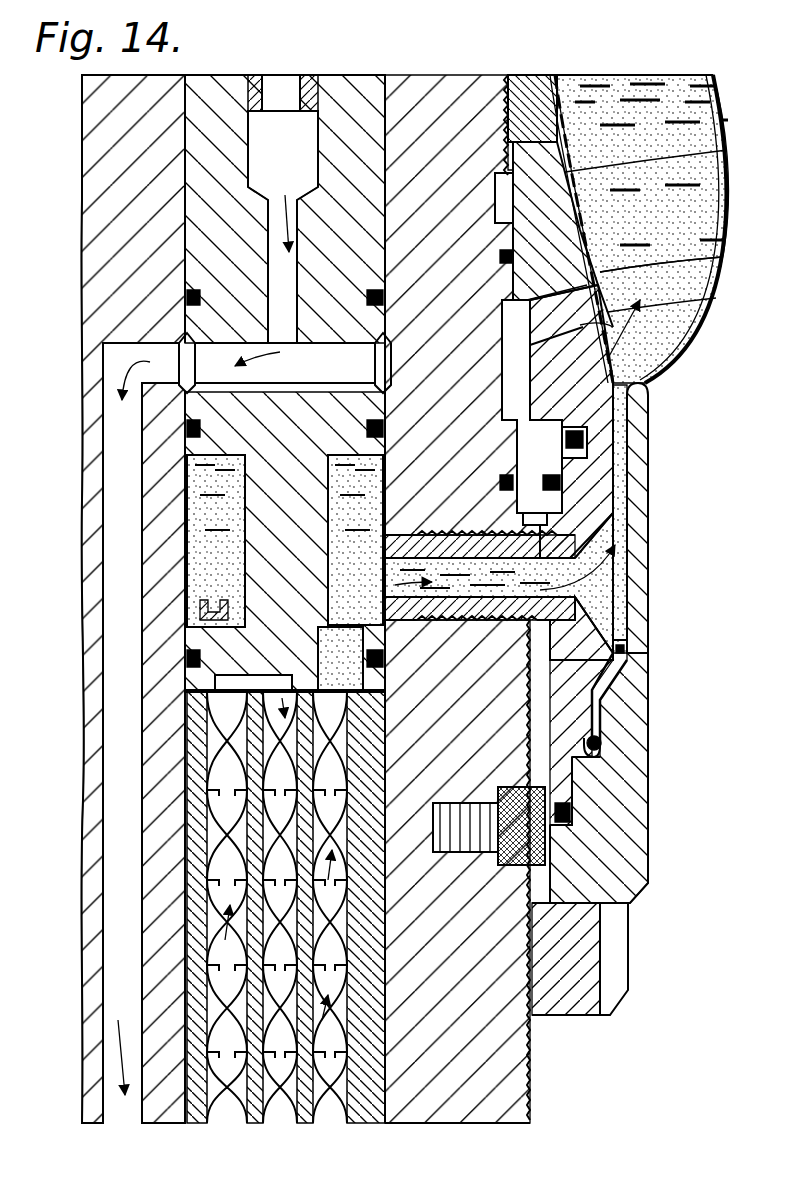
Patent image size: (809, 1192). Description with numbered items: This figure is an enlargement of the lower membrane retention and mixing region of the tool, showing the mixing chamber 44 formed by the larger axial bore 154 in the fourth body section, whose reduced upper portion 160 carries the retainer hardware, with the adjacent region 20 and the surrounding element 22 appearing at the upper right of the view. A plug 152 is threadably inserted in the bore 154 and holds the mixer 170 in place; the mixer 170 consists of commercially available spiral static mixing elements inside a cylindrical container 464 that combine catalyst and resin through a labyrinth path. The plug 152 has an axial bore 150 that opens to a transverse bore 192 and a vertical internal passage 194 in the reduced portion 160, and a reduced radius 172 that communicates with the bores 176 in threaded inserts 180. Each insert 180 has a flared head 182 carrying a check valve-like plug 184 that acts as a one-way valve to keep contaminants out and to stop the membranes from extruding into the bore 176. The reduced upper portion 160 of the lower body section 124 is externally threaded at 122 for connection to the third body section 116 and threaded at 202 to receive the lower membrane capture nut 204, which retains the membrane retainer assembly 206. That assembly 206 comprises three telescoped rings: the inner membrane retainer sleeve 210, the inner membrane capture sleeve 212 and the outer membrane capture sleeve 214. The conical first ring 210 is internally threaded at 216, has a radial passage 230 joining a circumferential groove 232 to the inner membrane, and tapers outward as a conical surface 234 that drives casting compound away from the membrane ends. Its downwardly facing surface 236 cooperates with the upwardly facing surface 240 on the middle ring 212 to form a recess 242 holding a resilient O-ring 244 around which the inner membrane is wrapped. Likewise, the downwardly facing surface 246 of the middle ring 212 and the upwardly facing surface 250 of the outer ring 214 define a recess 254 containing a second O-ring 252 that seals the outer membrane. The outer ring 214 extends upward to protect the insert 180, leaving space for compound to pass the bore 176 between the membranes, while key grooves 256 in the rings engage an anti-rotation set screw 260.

The liquid 20 is at (722, 162).
The container 22 is at (725, 140).
The mixing chamber 44 is at (227, 1123).
The third body section 116 is at (533, 105).
The external threads 122 is at (508, 75).
The lower body section 124 is at (403, 247).
The axial bore 150 is at (318, 140).
The plug 152 is at (190, 207).
The larger axial bore 154 is at (190, 170).
The reduced upper portion 160 is at (92, 582).
The mixer 170 is at (323, 1123).
The reduced radius 172 is at (243, 515).
The bore 176 is at (575, 578).
The threaded insert 180 is at (580, 605).
The flared head 182 is at (605, 620).
The check valve-like plug 184 is at (610, 552).
The transverse bore 192 is at (324, 374).
The vertical internal passage 194 is at (125, 445).
The external threads 202 is at (550, 1040).
The lower membrane capture nut 204 is at (610, 1000).
The membrane retainer assembly 206 is at (663, 745).
The inner membrane retainer sleeve 210 is at (622, 383).
The inner membrane capture sleeve 212 is at (600, 492).
The outer membrane capture sleeve 214 is at (615, 810).
The internal threads 216 is at (500, 160).
The radial passage 230 is at (585, 295).
The circumferential groove 232 is at (645, 345).
The conical surface 234 is at (712, 262).
The downwardly facing surface 236 is at (650, 415).
The upwardly facing surface 240 is at (580, 450).
The recess 242 is at (610, 478).
The resilient O-ring 244 is at (590, 445).
The downwardly facing surface 246 is at (610, 672).
The upwardly facing surface 250 is at (605, 690).
The second resilient O-ring 252 is at (600, 760).
The recess 254 is at (600, 722).
The key groove 256 is at (600, 783).
The anti-rotation key 260 is at (540, 830).
The cylindrical container 464 is at (370, 1115).